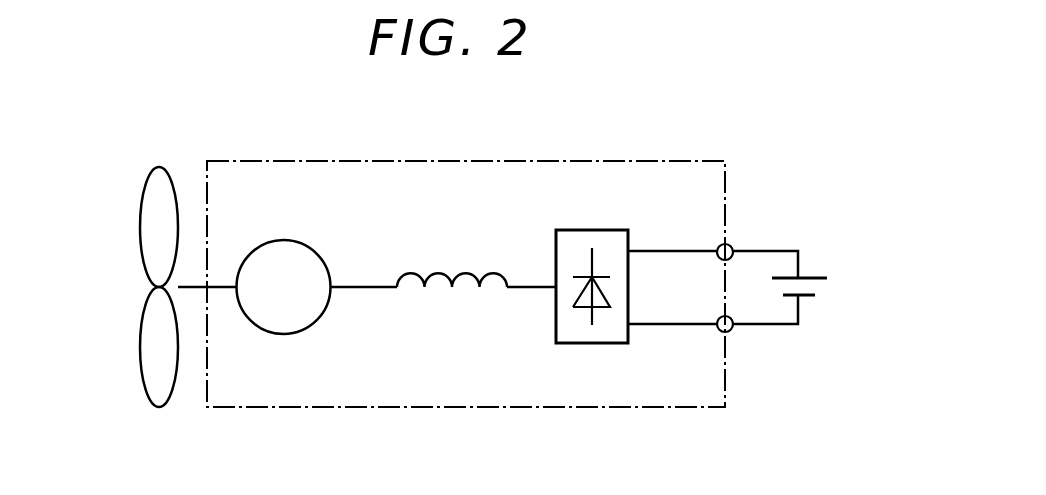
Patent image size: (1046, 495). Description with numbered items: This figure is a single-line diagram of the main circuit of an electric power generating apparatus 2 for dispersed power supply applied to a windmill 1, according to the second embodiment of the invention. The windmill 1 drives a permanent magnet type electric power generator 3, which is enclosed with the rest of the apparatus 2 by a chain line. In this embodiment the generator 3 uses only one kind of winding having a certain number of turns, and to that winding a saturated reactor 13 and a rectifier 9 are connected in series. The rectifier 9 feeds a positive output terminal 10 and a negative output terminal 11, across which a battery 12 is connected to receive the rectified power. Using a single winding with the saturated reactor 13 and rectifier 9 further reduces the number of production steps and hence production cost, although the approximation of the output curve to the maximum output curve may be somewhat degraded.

The windmill 1 is at (159, 166).
The electric power generating apparatus 2 is at (567, 407).
The permanent magnet type electric power generator 3 is at (283, 240).
The rectifier 9 is at (555, 310).
The positive output terminal 10 is at (731, 247).
The negative output terminal 11 is at (729, 331).
The battery 12 is at (817, 273).
The saturated reactor 13 is at (460, 273).